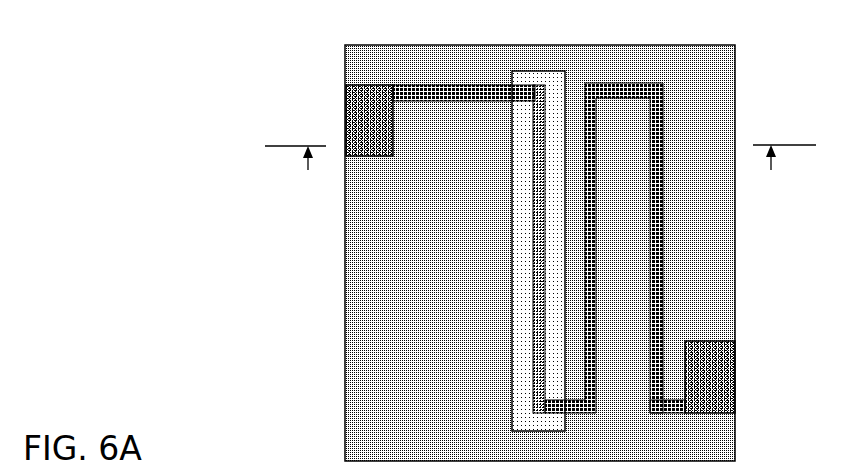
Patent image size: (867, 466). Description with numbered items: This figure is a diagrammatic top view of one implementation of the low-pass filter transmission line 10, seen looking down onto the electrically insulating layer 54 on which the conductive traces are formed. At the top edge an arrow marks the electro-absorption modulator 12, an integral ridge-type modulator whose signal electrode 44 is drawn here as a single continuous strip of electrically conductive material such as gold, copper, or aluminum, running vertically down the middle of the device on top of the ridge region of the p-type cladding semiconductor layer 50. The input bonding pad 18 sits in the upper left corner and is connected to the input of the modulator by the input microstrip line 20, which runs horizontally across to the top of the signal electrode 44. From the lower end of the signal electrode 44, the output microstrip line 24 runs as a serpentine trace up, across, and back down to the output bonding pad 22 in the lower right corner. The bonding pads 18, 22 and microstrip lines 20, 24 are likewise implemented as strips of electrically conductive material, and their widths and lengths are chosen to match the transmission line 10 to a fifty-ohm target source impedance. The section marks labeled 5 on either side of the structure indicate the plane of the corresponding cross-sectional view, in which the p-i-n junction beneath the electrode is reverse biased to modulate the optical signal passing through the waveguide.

The section line 5- 5 is at (540, 175).
The low-pass filter transmission line 10 is at (205, 245).
The electro-absorption modulator 12 is at (531, 10).
The input bonding pad 18 is at (337, 93).
The input microstrip line 20 is at (437, 95).
The output bonding pad 22 is at (722, 370).
The output microstrip line 24 is at (645, 223).
The signal electrode 44 is at (531, 356).
The p-type cladding semiconductor layer 50 is at (505, 210).
The electrically insulating layer 54 is at (337, 375).